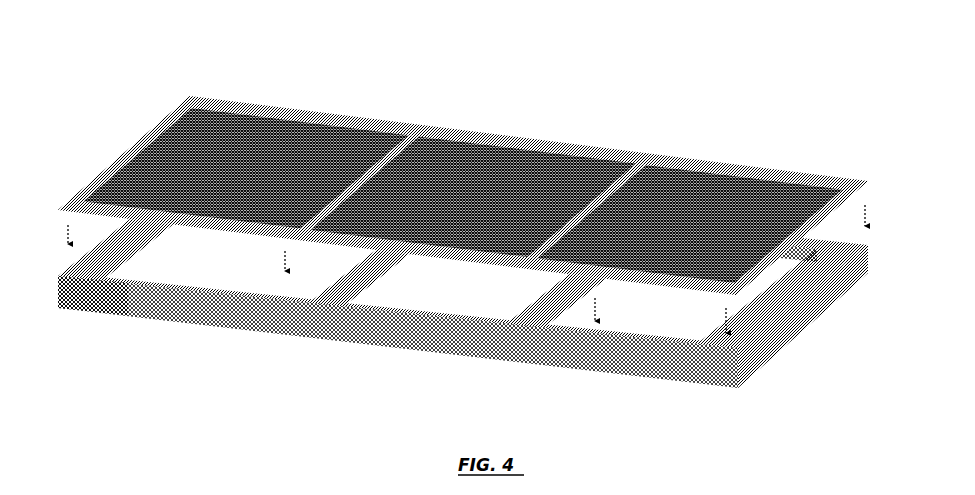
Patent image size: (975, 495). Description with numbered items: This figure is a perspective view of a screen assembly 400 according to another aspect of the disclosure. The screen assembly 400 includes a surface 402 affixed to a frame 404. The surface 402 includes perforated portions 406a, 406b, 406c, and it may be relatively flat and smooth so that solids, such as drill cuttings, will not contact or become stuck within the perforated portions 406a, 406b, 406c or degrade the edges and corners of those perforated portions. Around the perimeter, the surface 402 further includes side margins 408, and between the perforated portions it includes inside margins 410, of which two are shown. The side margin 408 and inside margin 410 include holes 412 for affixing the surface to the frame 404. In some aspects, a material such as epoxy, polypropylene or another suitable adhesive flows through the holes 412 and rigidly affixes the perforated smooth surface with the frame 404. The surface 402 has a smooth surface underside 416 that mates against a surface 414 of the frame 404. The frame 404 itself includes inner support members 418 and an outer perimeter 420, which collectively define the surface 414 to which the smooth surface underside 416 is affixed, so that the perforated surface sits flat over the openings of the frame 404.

The screen assembly 400 is at (455, 206).
The surface 402 is at (455, 172).
The frame 404 is at (462, 285).
The perforated portion 406a is at (257, 108).
The perforated portion 406b is at (453, 153).
The perforated portion 406c is at (738, 178).
The side margins 408 is at (842, 173).
The inside margins 410 is at (628, 148).
The holes 412 is at (172, 100).
The surface 414 is at (70, 268).
The smooth surface underside 416 is at (80, 207).
The inner support members 418 is at (530, 293).
The outer perimeter 420 is at (227, 308).